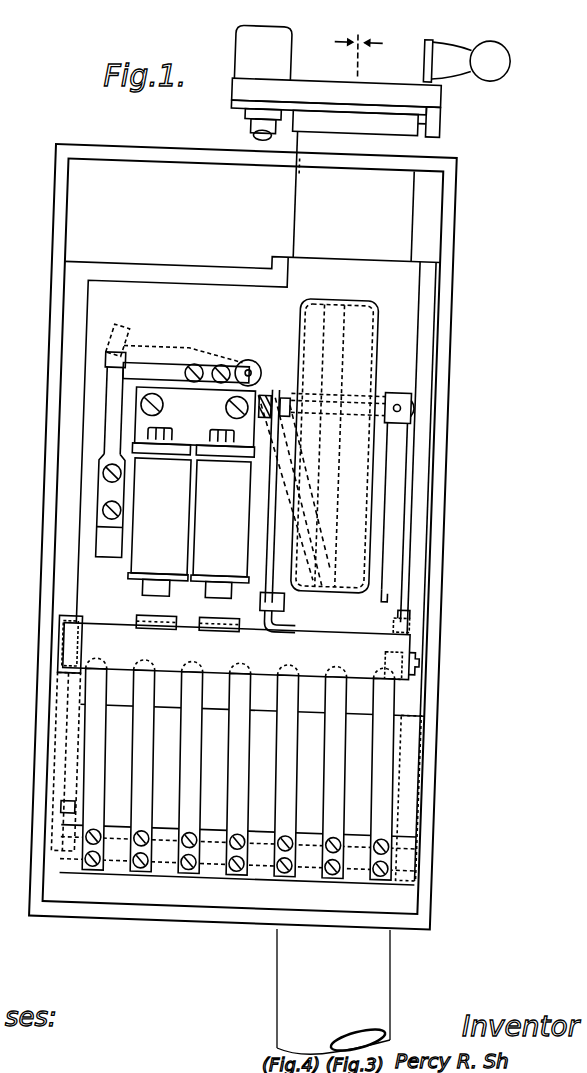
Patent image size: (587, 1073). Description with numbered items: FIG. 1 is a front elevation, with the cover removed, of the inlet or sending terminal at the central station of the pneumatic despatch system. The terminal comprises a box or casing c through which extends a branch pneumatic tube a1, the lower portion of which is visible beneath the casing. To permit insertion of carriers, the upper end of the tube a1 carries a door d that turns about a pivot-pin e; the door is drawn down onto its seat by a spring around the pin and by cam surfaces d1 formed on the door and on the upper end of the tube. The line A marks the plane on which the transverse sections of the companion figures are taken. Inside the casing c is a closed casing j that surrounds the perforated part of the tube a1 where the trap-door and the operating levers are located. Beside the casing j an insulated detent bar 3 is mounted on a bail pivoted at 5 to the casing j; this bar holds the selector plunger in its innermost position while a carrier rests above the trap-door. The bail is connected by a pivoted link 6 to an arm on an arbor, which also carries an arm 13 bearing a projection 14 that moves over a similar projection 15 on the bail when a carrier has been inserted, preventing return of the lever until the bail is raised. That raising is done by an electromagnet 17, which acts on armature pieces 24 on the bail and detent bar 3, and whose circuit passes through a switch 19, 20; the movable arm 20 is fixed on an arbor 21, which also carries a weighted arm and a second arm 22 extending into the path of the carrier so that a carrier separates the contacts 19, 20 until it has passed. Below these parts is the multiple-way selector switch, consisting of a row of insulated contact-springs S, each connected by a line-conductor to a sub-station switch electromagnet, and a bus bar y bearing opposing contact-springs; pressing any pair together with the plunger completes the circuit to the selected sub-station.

The section line A B A is at (359, 44).
The door d is at (308, 76).
The cam surfaces d1 is at (421, 108).
The pivot-pin e is at (252, 130).
The box or casing c is at (455, 461).
The switch contact 19 is at (120, 399).
The movable switch arm 20 is at (176, 366).
The arbor 21 is at (254, 362).
The electromagnet 17 is at (191, 493).
The pivoted link 6 is at (284, 514).
The arm 22 is at (320, 508).
The closed casing j is at (321, 586).
The arm 13 is at (401, 603).
The armature pieces 24 is at (218, 613).
The insulated detent bar 3 is at (236, 651).
The projection 14 is at (428, 618).
The projection 15 is at (414, 653).
The pivot 5 is at (437, 651).
The contact-springs S is at (151, 764).
The bus bar y is at (84, 806).
The branch pneumatic tube a1 is at (333, 992).